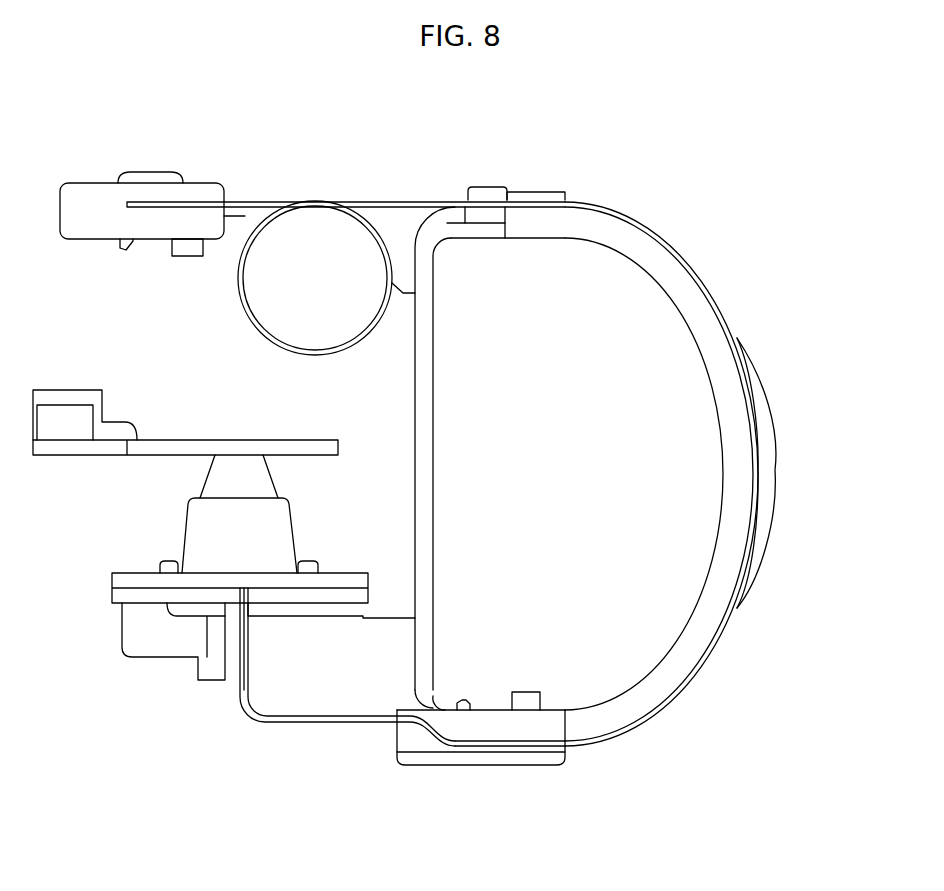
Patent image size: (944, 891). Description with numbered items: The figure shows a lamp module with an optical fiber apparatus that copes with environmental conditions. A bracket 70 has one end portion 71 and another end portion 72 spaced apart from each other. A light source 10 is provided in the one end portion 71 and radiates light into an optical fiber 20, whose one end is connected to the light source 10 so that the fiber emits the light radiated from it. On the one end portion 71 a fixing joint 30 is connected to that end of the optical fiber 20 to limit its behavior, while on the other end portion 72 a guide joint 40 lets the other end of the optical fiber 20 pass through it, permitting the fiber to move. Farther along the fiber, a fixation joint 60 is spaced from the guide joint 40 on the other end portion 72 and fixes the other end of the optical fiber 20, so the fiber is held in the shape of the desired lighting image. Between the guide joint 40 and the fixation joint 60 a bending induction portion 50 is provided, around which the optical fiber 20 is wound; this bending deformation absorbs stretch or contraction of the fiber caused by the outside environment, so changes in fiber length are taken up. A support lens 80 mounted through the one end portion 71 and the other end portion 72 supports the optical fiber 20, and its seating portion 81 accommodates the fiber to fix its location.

The light source 10 is at (200, 518).
The optical fiber 20 is at (245, 698).
The fixing joint 30 is at (418, 745).
The guide joint 40 is at (408, 207).
The bending induction portion 50 is at (312, 232).
The fixation joint 60 is at (97, 193).
The bracket 70 is at (425, 475).
The one end portion 71 is at (423, 690).
The other end portion 72 is at (423, 267).
The support lens 80 is at (698, 317).
The seating portion 81 is at (772, 473).